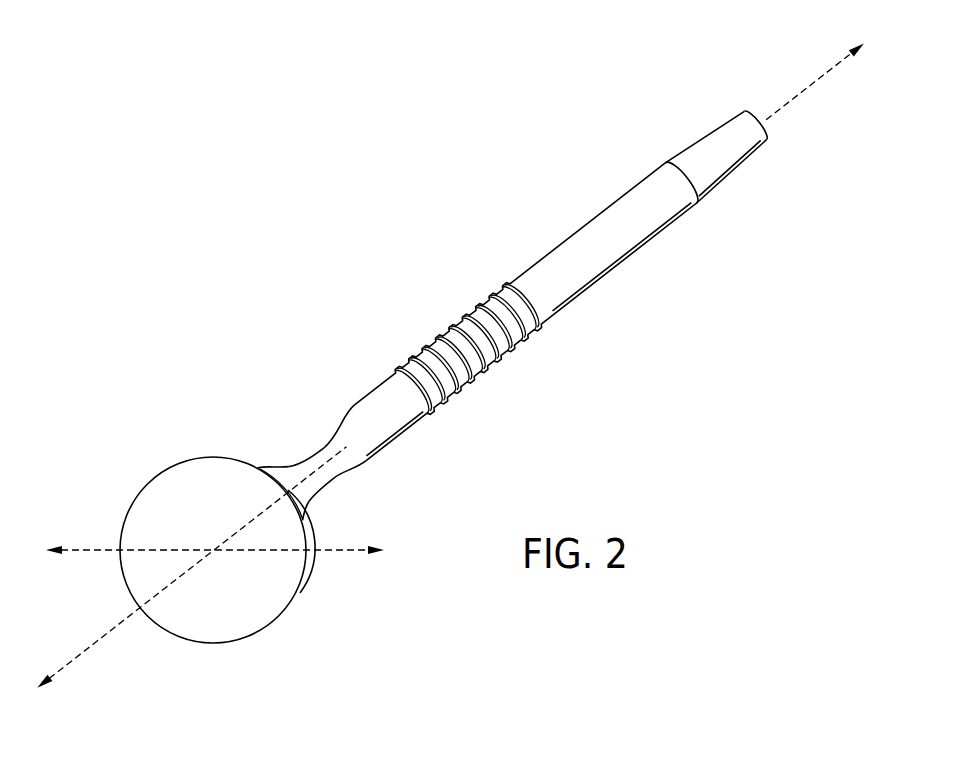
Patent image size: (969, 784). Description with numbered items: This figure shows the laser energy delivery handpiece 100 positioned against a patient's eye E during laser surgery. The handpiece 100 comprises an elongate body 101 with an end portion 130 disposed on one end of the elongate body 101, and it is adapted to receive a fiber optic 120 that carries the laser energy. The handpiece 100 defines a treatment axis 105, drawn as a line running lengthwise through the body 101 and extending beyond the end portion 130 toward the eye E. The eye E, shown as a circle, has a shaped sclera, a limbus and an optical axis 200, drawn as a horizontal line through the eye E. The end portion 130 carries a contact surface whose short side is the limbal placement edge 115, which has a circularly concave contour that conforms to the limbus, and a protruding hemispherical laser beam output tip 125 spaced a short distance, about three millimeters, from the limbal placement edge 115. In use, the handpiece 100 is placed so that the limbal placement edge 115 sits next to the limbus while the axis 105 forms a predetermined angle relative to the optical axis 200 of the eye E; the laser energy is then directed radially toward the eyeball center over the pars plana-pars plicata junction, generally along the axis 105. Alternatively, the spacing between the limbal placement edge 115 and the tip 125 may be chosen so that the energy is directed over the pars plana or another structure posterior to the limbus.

The laser energy delivery handpiece 100 is at (181, 149).
The elongate body 101 is at (558, 245).
The treatment axis 105 is at (98, 638).
The limbal placement edge 115 is at (303, 510).
The fiber optic 120 is at (323, 464).
The laser beam output tip 125 is at (288, 490).
The end portion 130 is at (357, 415).
The optical axis 200 is at (335, 551).
The eye E is at (170, 522).